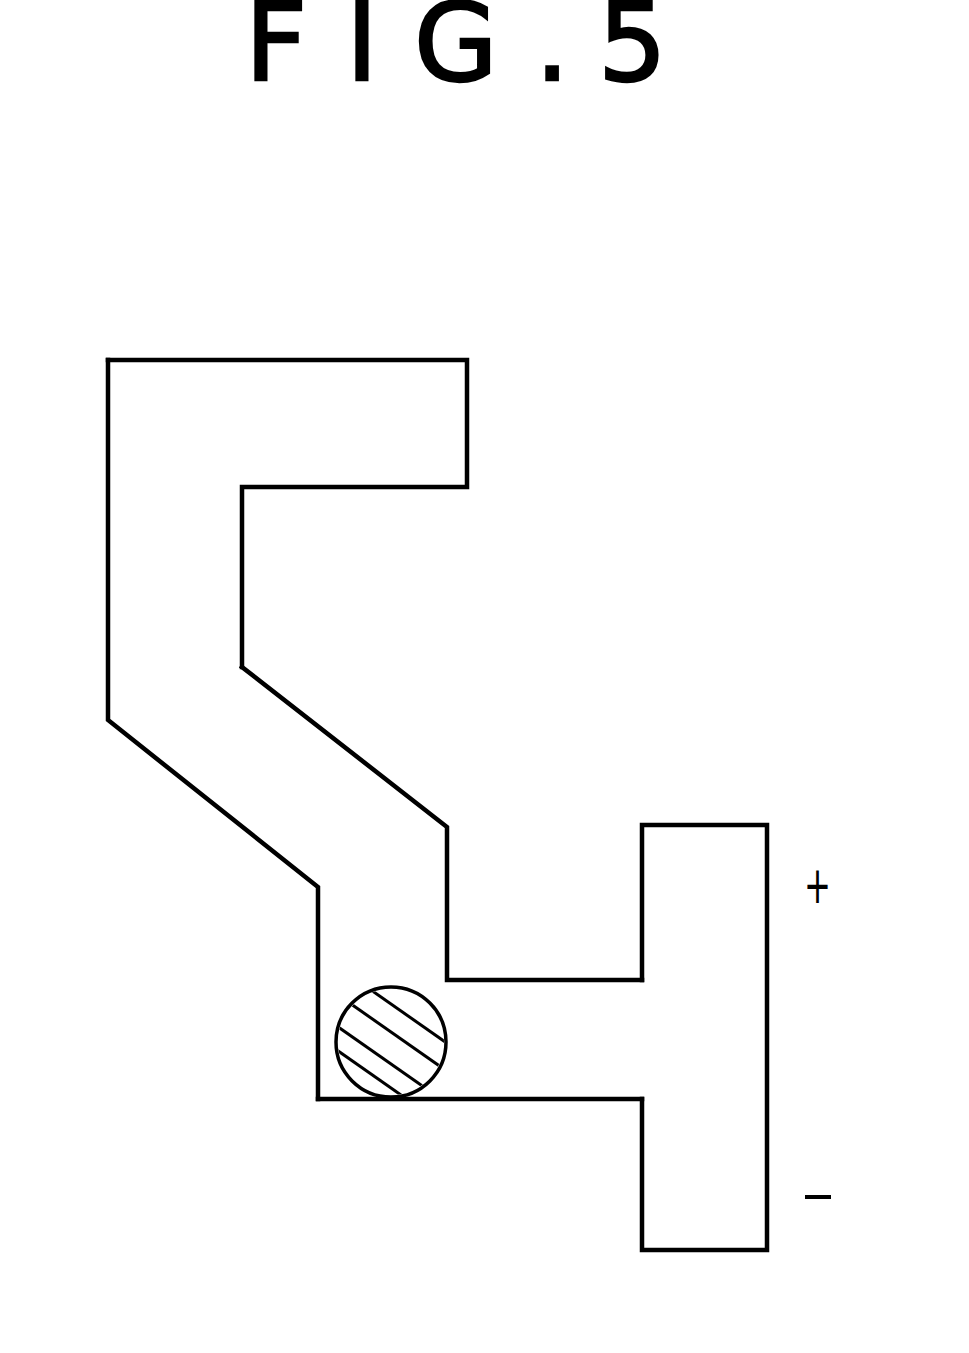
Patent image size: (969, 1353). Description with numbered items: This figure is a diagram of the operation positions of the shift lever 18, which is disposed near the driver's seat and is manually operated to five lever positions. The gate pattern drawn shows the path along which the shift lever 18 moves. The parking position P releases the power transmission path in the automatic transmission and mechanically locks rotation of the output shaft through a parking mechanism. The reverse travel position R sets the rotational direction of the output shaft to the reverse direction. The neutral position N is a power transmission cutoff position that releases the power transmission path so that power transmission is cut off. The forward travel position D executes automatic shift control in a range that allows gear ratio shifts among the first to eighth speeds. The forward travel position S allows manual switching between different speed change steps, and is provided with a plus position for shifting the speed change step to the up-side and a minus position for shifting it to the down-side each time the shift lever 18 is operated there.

The shift lever 18 is at (375, 1078).
The parking position P is at (287, 476).
The reverse travel position R is at (180, 729).
The neutral position N is at (442, 823).
The forward travel position D is at (444, 1064).
The manual forward travel position S is at (735, 1037).